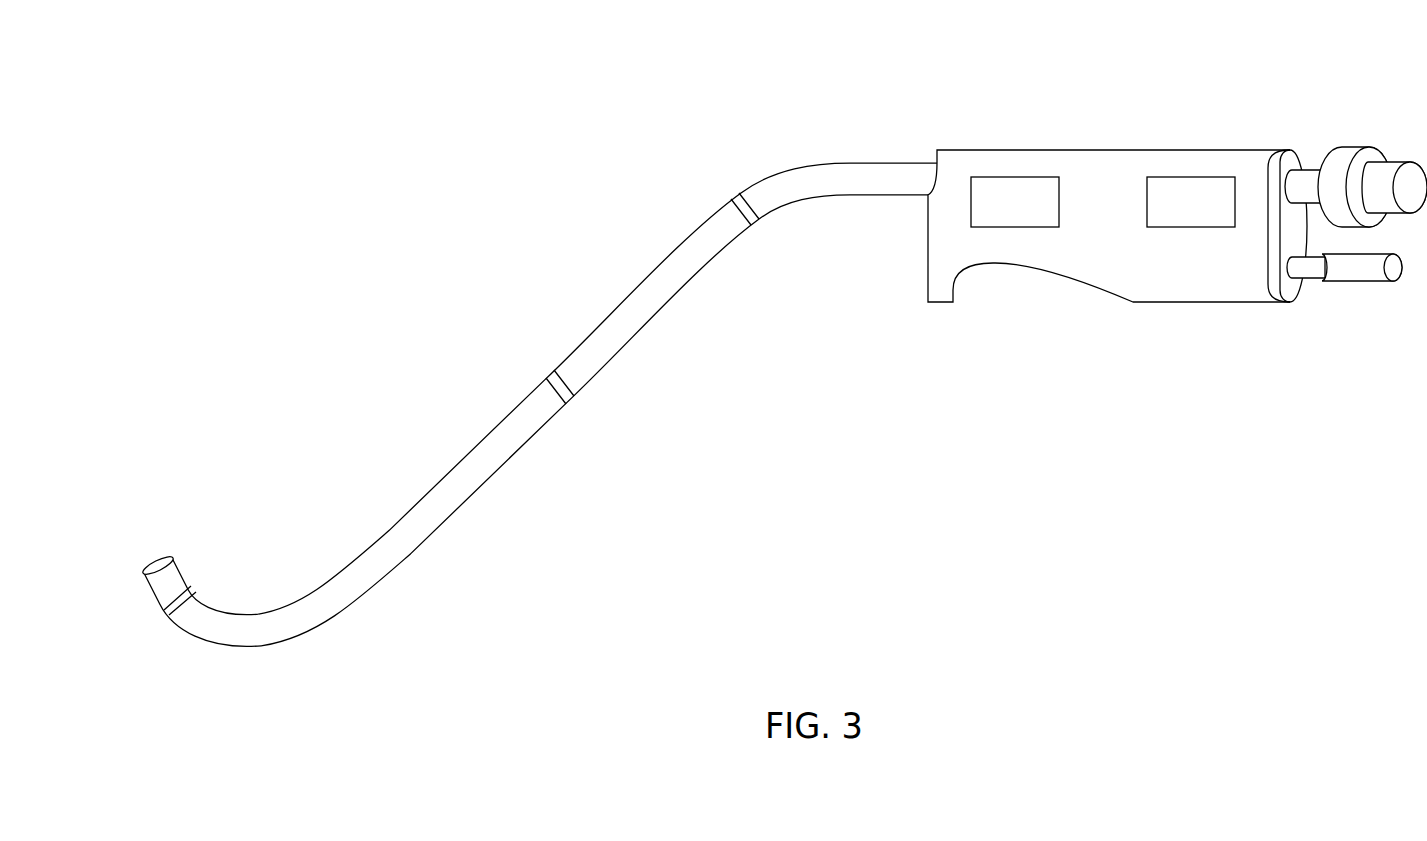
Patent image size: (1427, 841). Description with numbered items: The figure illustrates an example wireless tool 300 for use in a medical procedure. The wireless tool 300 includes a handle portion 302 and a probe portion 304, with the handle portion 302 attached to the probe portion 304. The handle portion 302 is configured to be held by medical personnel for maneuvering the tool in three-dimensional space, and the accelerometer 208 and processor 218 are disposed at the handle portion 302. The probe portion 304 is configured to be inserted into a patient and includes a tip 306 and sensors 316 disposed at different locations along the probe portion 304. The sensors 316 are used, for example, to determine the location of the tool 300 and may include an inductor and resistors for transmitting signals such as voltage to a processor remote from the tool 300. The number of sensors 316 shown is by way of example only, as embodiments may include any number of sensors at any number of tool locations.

The wireless tool 300 is at (767, 372).
The handle portion 302 is at (1177, 226).
The probe portion 304 is at (640, 284).
The tip 306 is at (156, 560).
The sensors 316 is at (757, 218).
The accelerometer 208 is at (1012, 227).
The processor 218 is at (1192, 227).